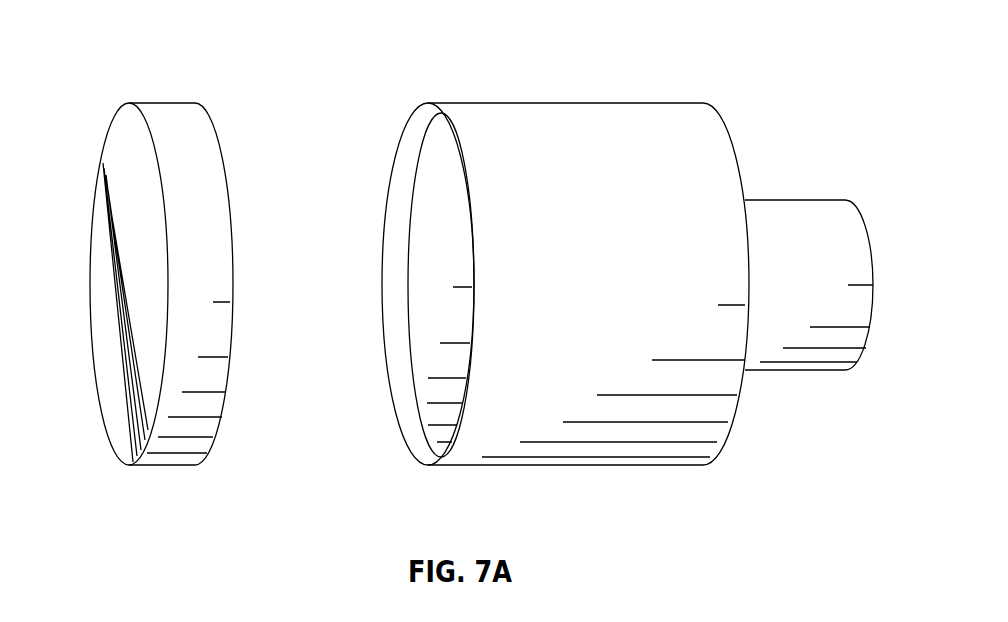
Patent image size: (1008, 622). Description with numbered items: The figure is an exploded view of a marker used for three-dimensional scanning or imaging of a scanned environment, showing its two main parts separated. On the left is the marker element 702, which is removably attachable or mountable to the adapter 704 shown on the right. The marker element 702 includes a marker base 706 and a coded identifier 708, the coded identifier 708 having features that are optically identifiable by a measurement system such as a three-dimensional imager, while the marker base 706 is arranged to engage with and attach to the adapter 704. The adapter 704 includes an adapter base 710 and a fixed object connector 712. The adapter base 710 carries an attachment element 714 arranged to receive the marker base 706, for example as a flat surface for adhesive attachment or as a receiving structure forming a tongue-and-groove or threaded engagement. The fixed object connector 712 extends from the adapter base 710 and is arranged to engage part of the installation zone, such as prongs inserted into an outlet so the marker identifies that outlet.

The marker element 702 is at (90, 88).
The adapter 704 is at (388, 90).
The marker base 706 is at (180, 448).
The coded identifier 708 is at (135, 214).
The adapter base 710 is at (560, 450).
The fixed object connector 712 is at (807, 357).
The attachment element 714 is at (428, 263).